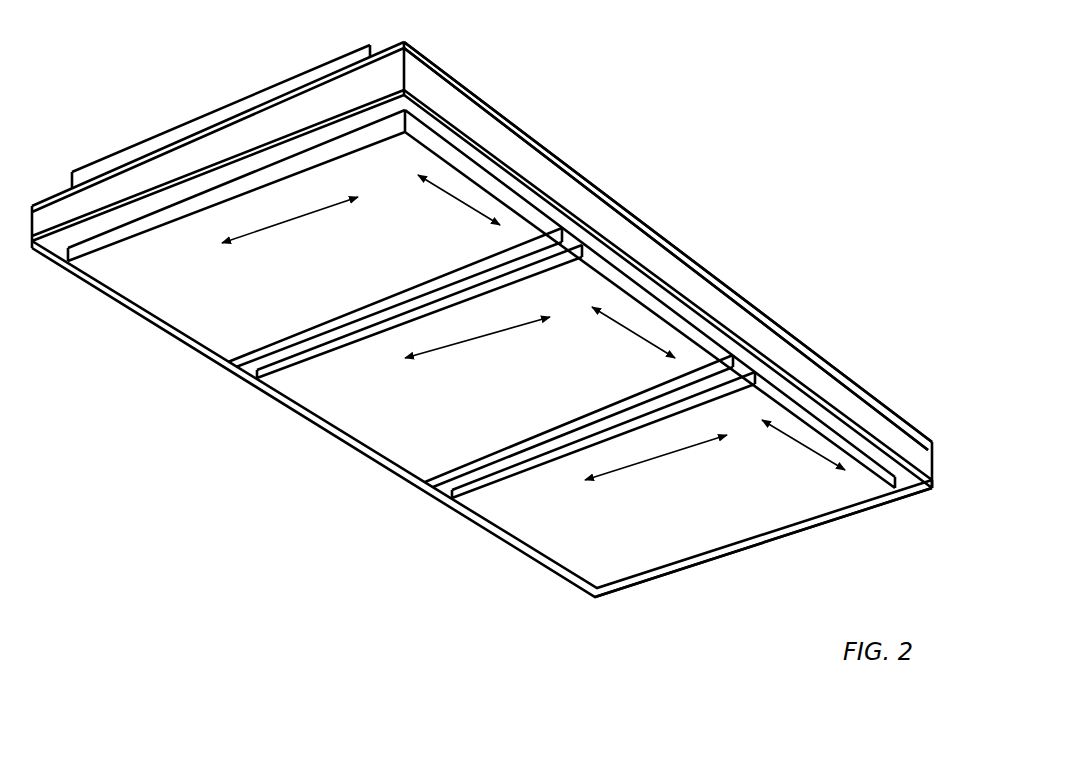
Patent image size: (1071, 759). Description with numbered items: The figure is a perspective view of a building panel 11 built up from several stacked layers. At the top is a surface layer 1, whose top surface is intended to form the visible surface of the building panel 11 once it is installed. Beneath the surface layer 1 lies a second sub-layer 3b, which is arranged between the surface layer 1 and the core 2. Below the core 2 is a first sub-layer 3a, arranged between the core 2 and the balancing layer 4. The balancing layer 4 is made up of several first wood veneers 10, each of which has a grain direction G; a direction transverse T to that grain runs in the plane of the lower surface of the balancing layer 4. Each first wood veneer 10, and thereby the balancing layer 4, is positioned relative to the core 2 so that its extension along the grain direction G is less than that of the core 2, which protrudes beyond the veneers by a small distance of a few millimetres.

The surface layer 1 is at (228, 112).
The core 2 is at (750, 332).
The first sub-layer 3a is at (902, 494).
The second sub-layer 3b is at (570, 165).
The balancing layer 4 is at (350, 380).
The first wood veneer 10 is at (216, 283).
The building panel 11 is at (706, 204).